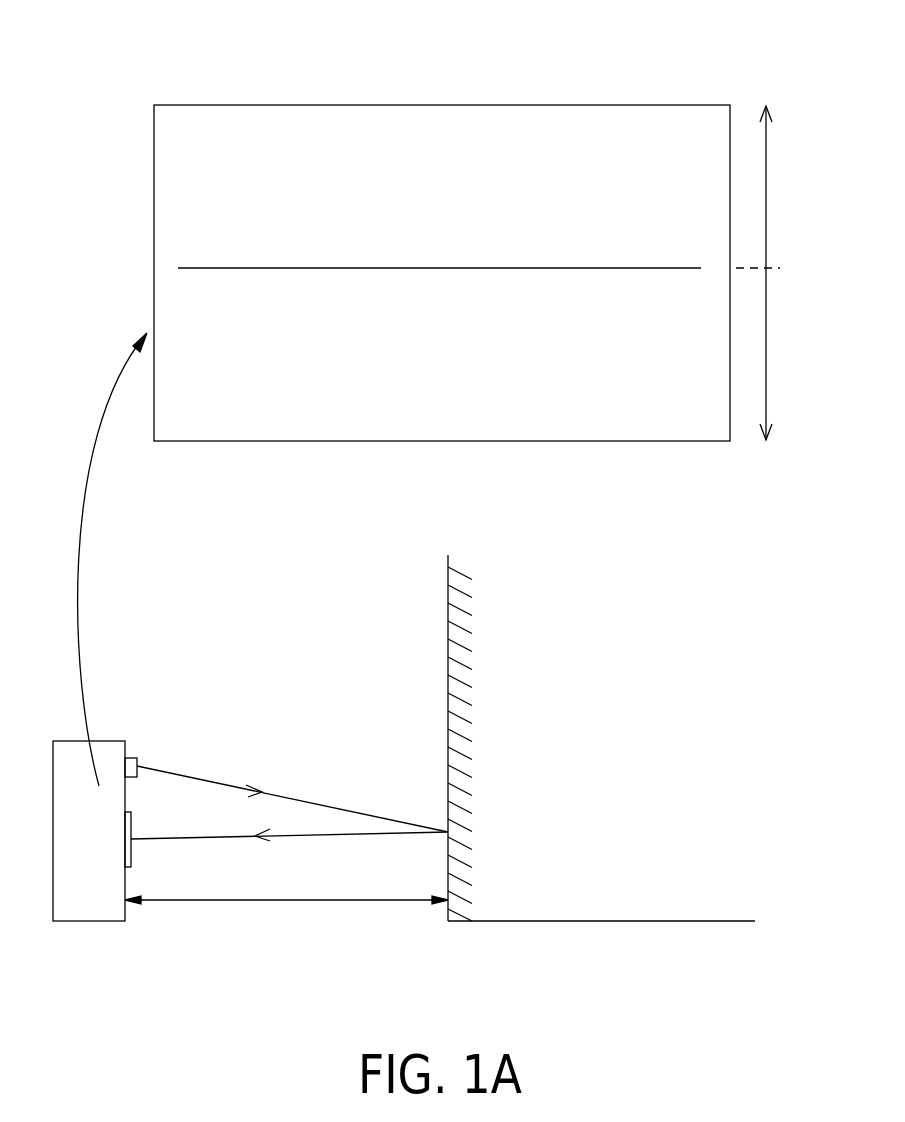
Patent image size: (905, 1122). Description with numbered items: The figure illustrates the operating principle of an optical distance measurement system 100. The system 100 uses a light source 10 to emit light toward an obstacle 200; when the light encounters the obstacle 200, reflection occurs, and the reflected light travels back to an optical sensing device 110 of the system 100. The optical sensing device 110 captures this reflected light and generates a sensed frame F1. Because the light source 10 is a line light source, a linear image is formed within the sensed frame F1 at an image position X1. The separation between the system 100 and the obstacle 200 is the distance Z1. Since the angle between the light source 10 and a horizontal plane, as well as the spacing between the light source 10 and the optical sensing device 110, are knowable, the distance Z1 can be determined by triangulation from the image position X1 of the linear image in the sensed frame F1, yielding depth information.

The sensed frame F1 is at (488, 76).
The image position X1 is at (778, 273).
The obstacle 200 is at (506, 638).
The optical distance measurement system 100 is at (130, 714).
The light source 10 is at (129, 757).
The optical sensing device 110 is at (128, 826).
The distance Z1 is at (286, 886).